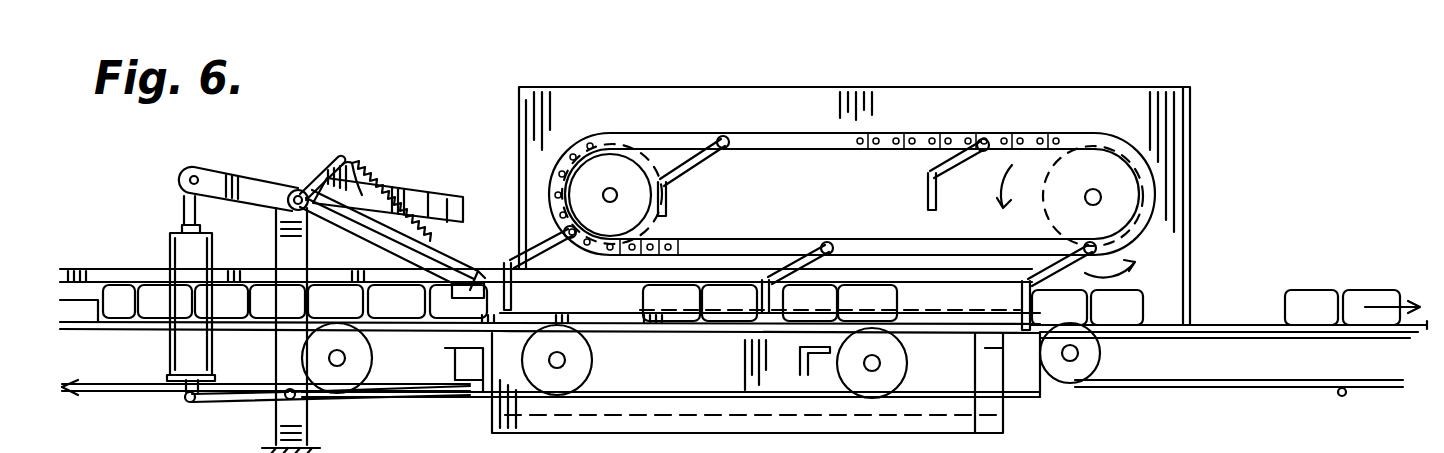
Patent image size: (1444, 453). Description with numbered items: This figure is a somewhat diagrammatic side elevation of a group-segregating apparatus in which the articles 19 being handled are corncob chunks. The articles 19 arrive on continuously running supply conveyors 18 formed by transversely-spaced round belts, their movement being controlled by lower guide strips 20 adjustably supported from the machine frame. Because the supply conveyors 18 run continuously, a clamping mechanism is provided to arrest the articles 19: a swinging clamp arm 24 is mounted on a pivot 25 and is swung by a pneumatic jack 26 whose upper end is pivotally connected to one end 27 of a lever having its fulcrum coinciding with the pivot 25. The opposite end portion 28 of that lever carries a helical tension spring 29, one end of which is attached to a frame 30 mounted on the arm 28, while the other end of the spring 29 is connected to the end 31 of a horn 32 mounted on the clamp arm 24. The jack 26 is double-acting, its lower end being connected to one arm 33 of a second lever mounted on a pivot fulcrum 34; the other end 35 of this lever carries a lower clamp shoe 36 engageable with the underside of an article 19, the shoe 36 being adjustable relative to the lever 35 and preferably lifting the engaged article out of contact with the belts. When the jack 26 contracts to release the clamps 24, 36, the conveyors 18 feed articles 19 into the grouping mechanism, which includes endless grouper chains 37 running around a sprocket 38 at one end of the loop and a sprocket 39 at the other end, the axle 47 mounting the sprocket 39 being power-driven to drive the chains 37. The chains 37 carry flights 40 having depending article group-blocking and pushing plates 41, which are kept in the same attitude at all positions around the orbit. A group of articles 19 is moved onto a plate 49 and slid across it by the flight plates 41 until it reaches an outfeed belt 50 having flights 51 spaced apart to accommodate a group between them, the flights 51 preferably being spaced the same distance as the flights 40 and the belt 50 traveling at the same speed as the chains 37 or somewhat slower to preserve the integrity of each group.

The supply conveyor 18 is at (140, 323).
The article 19 is at (195, 292).
The guide strip 20 is at (965, 318).
The swinging clamp arm 24 is at (375, 245).
The pivot 25 is at (296, 192).
The pneumatic jack 26 is at (212, 352).
The lever end 27 is at (217, 168).
The opposite end portion of lever 28 is at (368, 168).
The helical tension spring 29 is at (398, 185).
The frame 30 is at (455, 222).
The horn end 31 is at (350, 163).
The horn 32 is at (338, 175).
The lever arm 33 is at (205, 405).
The pivot fulcrum 34 is at (305, 400).
The lever end 35 is at (450, 398).
The lower clamp shoe 36 is at (440, 338).
The grouper chain 37 is at (545, 173).
The sprocket 38 is at (625, 163).
The sprocket 39 is at (1083, 137).
The flight 40 is at (712, 168).
The article group-blocking and pushing plate 41 is at (668, 212).
The axle 47 is at (1105, 196).
The plate 49 is at (1018, 340).
The outfeed belt 50 is at (1205, 325).
The flight 51 is at (1280, 325).